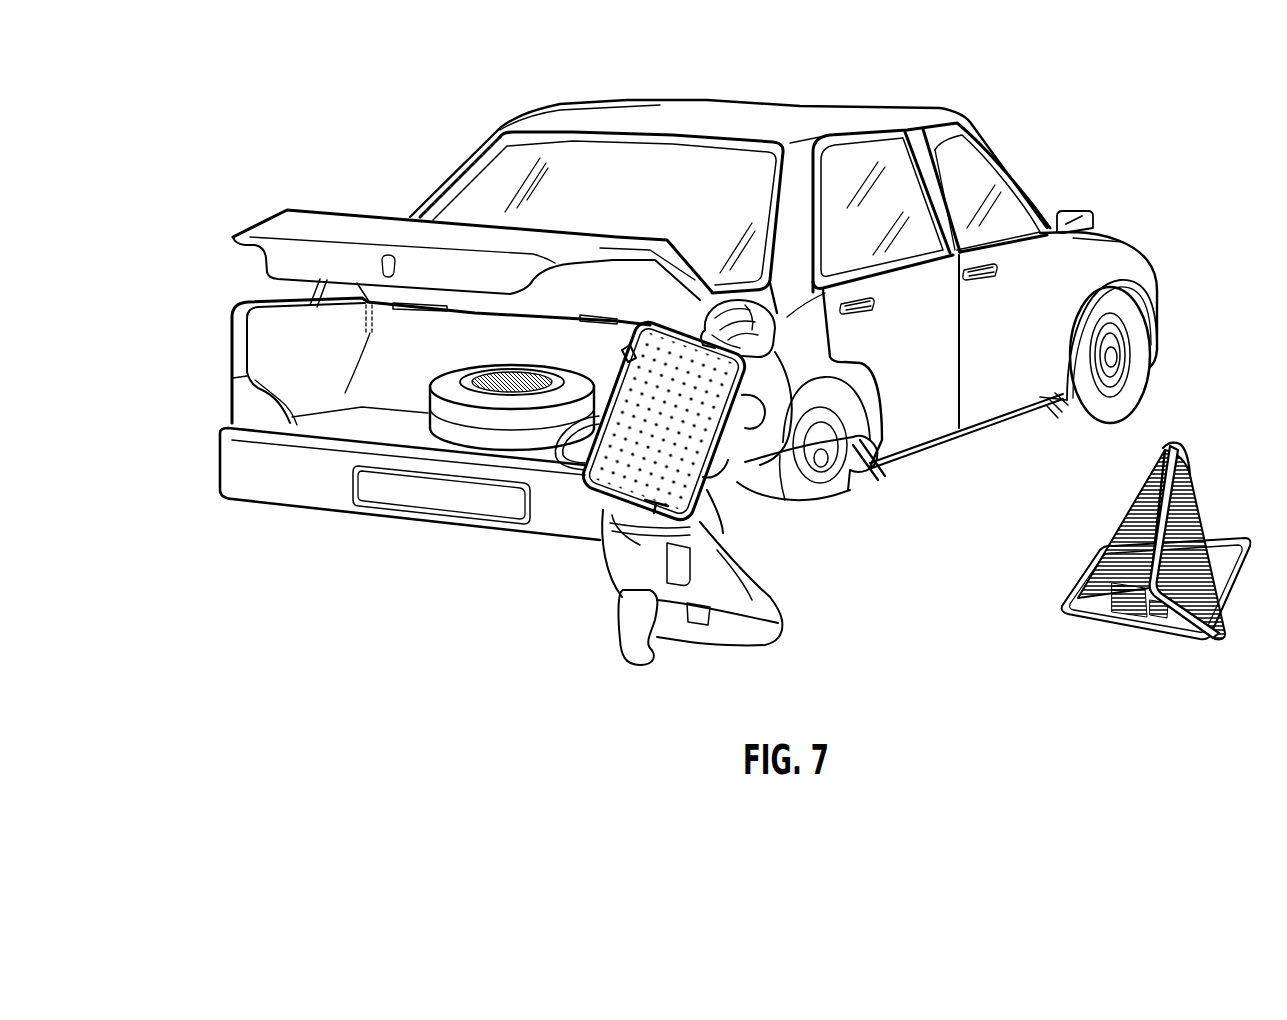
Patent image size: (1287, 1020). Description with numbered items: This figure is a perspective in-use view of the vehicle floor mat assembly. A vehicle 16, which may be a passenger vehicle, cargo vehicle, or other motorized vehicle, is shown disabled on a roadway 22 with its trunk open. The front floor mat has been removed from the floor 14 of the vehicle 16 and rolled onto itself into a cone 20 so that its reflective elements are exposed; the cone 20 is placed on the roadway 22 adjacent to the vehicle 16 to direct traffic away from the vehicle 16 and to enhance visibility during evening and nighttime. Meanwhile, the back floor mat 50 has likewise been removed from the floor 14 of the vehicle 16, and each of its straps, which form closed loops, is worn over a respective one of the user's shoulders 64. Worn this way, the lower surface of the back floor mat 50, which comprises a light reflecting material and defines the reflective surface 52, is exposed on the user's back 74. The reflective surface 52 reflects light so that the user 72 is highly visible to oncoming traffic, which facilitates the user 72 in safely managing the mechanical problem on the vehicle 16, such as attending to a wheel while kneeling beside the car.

The floor 14 is at (980, 393).
The vehicle 16 is at (1040, 153).
The cone 20 is at (1177, 427).
The roadway 22 is at (355, 589).
The back floor mat 50 is at (590, 484).
The reflective surface 52 is at (655, 507).
The user's shoulders 64 is at (750, 463).
The user 72 is at (794, 626).
The user's back 74 is at (628, 536).